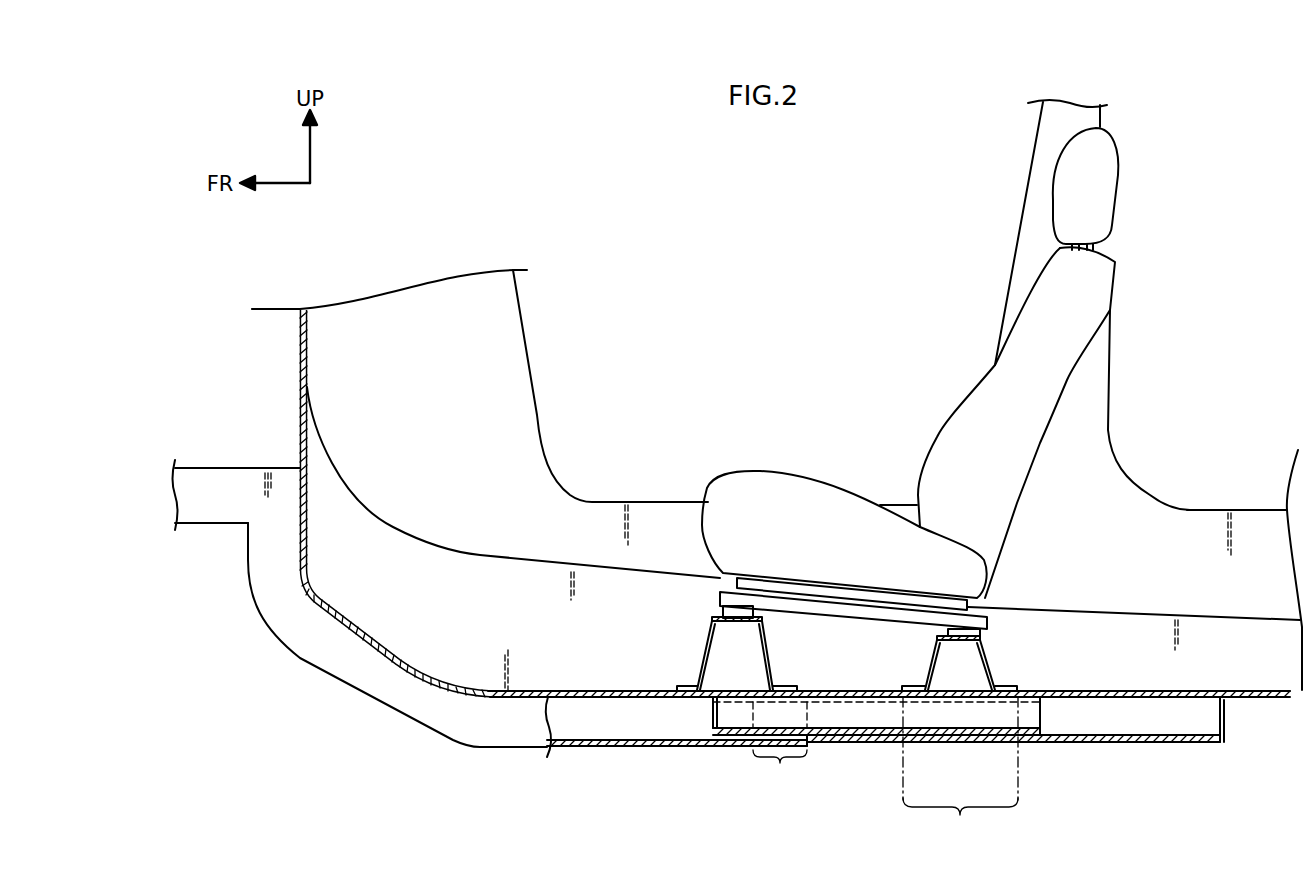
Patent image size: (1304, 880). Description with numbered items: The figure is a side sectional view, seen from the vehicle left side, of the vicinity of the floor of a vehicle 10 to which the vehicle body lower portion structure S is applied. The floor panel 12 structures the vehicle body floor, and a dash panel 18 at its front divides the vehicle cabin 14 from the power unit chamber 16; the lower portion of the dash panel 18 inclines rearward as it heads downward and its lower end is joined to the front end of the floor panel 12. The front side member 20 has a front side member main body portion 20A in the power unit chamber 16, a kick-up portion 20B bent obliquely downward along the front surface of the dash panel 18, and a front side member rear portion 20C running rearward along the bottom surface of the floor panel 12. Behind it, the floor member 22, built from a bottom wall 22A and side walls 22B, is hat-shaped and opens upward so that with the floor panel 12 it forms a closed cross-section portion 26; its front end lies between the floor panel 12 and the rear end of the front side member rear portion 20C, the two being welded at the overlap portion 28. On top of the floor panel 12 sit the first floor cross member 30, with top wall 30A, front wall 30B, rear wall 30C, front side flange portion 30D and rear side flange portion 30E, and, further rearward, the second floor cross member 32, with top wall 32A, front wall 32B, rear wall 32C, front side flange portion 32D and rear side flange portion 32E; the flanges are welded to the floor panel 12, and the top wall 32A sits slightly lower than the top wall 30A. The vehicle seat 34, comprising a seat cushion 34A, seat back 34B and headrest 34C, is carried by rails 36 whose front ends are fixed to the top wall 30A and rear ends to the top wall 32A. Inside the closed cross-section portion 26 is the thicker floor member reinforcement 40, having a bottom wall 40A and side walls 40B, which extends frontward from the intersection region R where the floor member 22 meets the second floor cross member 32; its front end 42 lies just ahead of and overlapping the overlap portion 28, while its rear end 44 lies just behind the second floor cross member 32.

The vehicle 10 is at (602, 198).
The floor panel 12 is at (1253, 691).
The vehicle cabin 14 is at (722, 306).
The power unit chamber 16 is at (194, 368).
The dash panel 18 is at (298, 424).
The front side member 20 is at (490, 640).
The front side member main body portion 20A is at (213, 528).
The kick-up portion 20B is at (327, 677).
The front side member rear portion 20C is at (585, 748).
The floor member 22 is at (1047, 766).
The bottom wall 22A is at (1165, 745).
The side walls 22B is at (1222, 720).
The closed cross-section portion 26 is at (1106, 812).
The overlap portion 28 is at (780, 746).
The first floor cross member 30 is at (719, 641).
The top wall 30A is at (712, 617).
The front wall 30B is at (705, 656).
The rear wall 30C is at (770, 628).
The front side flange portion 30D is at (682, 687).
The rear side flange portion 30E is at (785, 688).
The second floor cross member 32 is at (984, 615).
The top wall 32A is at (962, 635).
The front wall 32B is at (935, 653).
The rear wall 32C is at (990, 657).
The front side flange portion 32D is at (918, 688).
The rear side flange portion 32E is at (1010, 688).
The vehicle seat 34 is at (946, 363).
The seat cushion 34A is at (745, 468).
The seat back 34B is at (980, 382).
The headrest 34C is at (1051, 197).
The rails 36 is at (722, 582).
The floor member reinforcement 40 is at (886, 750).
The bottom wall 40A is at (868, 723).
The side walls 40B is at (828, 713).
The front end 42 is at (710, 713).
The rear end 44 is at (1046, 717).
The vehicle body lower portion structure S is at (1064, 628).
The intersection region R is at (960, 773).